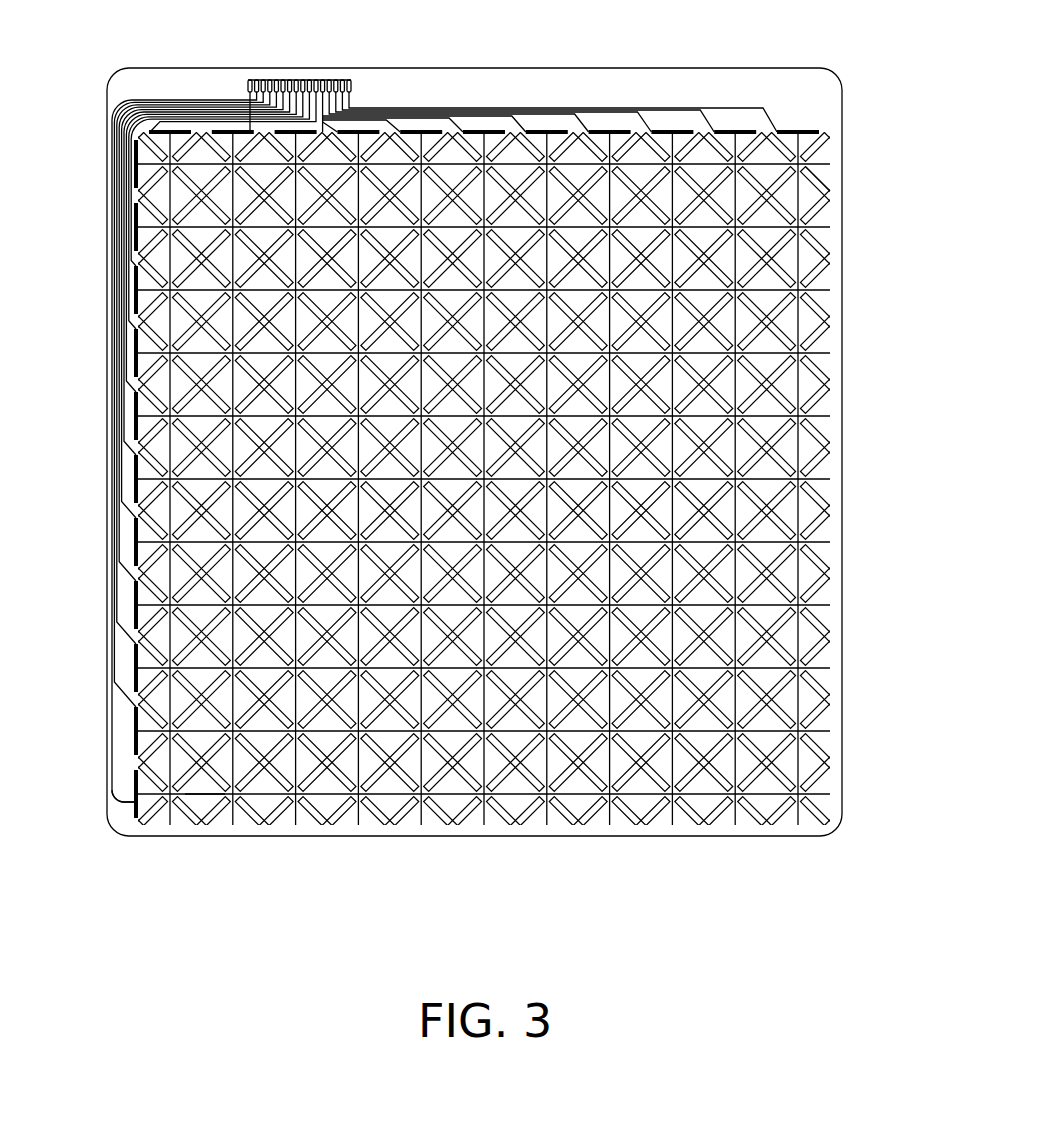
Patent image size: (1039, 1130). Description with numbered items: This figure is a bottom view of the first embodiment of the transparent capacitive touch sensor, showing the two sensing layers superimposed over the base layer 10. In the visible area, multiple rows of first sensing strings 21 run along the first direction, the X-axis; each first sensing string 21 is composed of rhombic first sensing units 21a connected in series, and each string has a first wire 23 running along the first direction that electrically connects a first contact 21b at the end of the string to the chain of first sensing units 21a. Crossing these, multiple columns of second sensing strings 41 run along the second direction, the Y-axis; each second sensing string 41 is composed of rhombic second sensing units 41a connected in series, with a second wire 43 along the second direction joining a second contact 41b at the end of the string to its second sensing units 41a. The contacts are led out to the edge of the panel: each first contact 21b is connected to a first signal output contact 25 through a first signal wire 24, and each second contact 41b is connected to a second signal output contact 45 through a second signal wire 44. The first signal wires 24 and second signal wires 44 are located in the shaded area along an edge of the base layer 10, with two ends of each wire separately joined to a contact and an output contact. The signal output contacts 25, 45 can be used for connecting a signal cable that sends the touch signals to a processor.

The base layer 10 is at (498, 67).
The first sensing string 21 is at (832, 716).
The first sensing unit 21a is at (205, 803).
The first contact 21b is at (128, 800).
The first wire 23 is at (775, 607).
The first signal wire 24 is at (116, 696).
The first signal output contact 25 is at (248, 86).
The second sensing string 41 is at (720, 825).
The second sensing unit 41a is at (810, 203).
The second contact 41b is at (805, 130).
The second wire 43 is at (800, 566).
The second signal wire 44 is at (638, 106).
The second signal output contact 45 is at (351, 86).